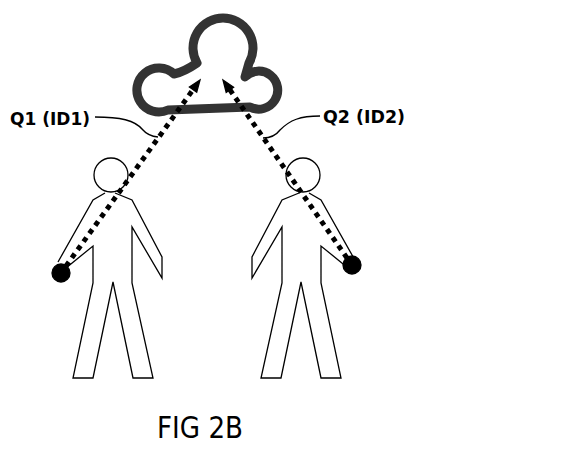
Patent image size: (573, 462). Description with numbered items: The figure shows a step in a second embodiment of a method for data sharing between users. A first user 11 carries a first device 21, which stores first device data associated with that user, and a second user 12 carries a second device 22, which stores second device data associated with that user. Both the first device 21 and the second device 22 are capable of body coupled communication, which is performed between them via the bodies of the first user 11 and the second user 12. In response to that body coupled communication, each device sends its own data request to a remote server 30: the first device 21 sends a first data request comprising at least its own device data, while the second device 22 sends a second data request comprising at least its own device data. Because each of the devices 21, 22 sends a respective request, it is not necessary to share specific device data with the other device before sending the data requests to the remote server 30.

The remote server 30 is at (179, 63).
The first user 11 is at (68, 367).
The second user 12 is at (351, 367).
The first device 21 is at (41, 266).
The second device 22 is at (373, 267).